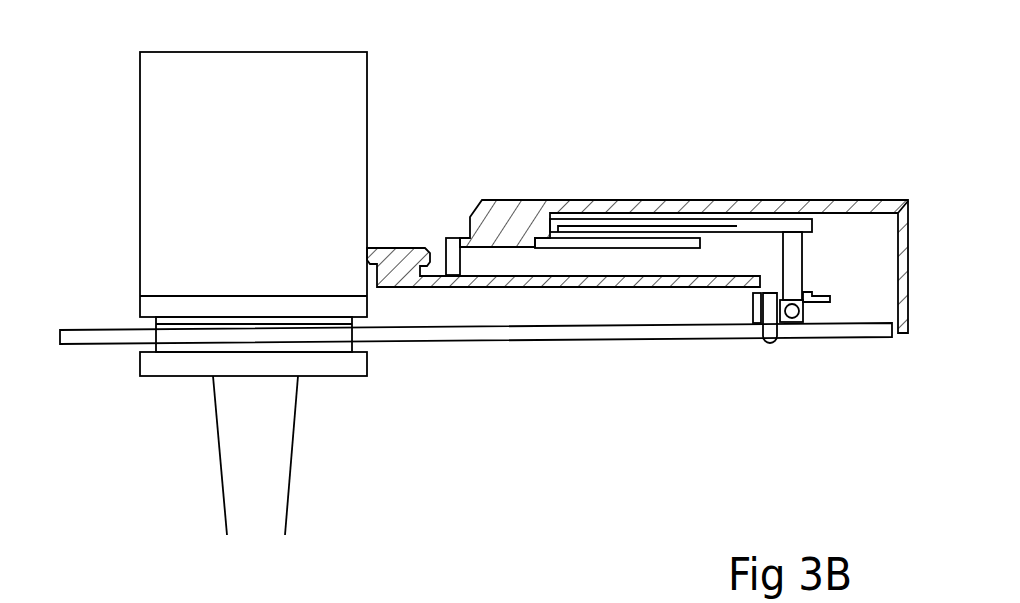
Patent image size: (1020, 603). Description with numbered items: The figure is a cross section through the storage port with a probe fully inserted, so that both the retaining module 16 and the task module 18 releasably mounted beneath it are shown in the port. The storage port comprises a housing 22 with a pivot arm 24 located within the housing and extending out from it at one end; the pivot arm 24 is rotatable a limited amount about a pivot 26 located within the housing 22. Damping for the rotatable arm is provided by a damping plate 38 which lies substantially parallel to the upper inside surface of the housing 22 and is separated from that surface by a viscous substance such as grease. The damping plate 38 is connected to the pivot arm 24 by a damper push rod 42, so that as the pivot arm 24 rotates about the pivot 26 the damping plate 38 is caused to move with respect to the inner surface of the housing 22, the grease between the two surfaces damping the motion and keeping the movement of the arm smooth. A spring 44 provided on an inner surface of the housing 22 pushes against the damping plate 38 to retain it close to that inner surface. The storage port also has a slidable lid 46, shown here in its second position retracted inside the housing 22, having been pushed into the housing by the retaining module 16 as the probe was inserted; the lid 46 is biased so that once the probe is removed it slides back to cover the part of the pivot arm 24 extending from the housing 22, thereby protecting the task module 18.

The retaining module 16 is at (162, 160).
The task module 18 is at (167, 379).
The housing 22 is at (492, 215).
The pivot arm 24 is at (565, 339).
The pivot 26 is at (796, 320).
The damping plate 38 is at (667, 225).
The damper push rod 42 is at (793, 257).
The spring 44 is at (644, 246).
The lid 46 is at (492, 280).